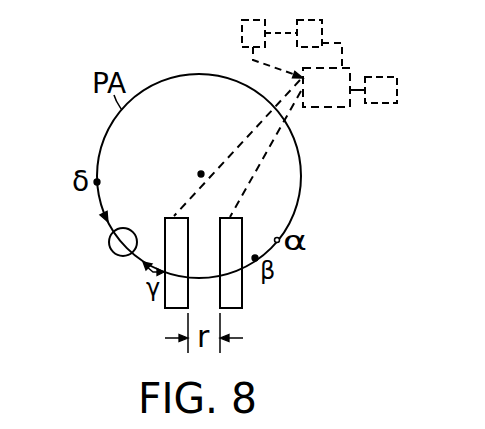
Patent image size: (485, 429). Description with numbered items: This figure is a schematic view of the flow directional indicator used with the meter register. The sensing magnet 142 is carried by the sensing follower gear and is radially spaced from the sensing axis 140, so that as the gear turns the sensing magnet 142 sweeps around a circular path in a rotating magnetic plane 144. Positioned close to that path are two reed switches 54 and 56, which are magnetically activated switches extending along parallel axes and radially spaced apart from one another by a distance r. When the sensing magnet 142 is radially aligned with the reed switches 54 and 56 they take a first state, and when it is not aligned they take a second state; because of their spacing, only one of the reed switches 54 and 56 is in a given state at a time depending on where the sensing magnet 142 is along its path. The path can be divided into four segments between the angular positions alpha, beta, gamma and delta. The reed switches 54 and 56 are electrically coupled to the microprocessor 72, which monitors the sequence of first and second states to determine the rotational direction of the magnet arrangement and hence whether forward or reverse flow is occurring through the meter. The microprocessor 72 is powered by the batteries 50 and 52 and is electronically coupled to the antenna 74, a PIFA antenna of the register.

The battery 50 is at (322, 33).
The battery 52 is at (242, 33).
The reed switch 54 is at (242, 297).
The reed switch 56 is at (165, 305).
The microprocessor 72 is at (323, 107).
The antenna 74 is at (378, 103).
The sensing axis 140 is at (201, 171).
The sensing magnet 142 is at (109, 238).
The rotating magnetic plane 144 is at (298, 205).